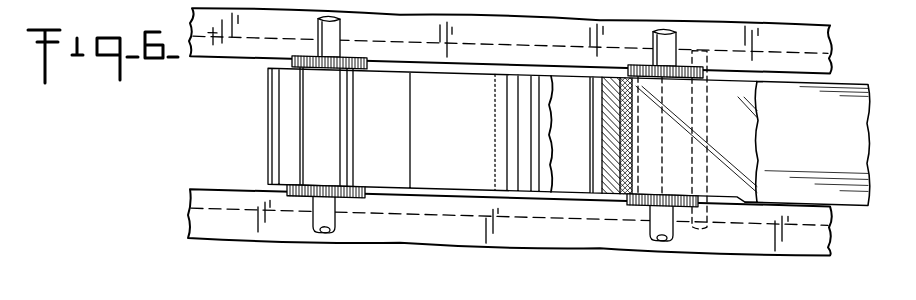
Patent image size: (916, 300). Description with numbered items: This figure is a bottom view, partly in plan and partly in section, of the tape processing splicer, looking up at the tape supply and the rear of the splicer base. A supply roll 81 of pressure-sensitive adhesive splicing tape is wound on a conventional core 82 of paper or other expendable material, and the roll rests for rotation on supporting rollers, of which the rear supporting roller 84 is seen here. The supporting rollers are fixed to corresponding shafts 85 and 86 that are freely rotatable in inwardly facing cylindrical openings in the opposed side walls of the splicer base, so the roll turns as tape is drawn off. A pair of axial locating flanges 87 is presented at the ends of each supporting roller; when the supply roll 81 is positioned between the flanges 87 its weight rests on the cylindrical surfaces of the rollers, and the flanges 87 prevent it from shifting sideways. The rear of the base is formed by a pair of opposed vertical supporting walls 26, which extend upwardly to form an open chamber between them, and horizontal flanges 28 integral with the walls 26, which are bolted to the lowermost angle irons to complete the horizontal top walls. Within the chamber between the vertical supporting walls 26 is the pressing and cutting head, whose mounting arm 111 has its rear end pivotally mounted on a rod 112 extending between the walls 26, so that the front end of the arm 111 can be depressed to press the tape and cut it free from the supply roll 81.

The vertical supporting wall 26 is at (833, 62).
The horizontal flange 28 is at (823, 42).
The supply roll 81 is at (472, 134).
The core 82 is at (602, 127).
The rear supporting roller 84 is at (337, 112).
The shaft 85 is at (675, 236).
The shaft 86 is at (335, 232).
The axial locating flange 87 is at (366, 57).
The mounting arm 111 is at (832, 148).
The rod 112 is at (707, 53).